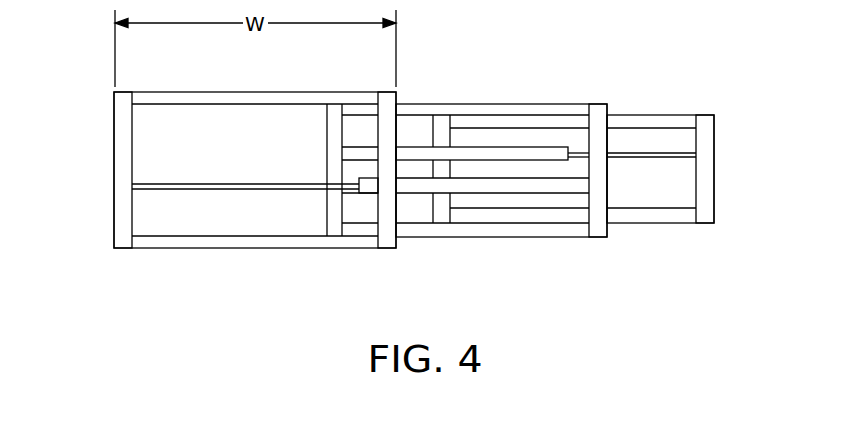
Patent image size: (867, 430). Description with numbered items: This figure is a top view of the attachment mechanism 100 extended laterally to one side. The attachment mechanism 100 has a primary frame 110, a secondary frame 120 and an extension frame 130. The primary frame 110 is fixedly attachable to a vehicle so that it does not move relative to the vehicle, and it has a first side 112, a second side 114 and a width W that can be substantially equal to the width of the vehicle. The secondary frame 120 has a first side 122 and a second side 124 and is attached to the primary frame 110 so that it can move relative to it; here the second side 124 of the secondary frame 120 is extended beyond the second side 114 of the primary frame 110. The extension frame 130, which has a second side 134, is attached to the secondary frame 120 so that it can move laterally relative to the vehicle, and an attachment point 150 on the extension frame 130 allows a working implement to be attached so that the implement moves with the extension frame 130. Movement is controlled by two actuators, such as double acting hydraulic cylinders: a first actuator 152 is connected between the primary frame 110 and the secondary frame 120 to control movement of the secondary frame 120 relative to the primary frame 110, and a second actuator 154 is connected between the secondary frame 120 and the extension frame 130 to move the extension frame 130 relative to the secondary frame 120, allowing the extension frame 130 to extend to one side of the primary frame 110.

The attachment mechanism 100 is at (517, 62).
The primary frame 110 is at (220, 241).
The first side 112 is at (114, 227).
The second side 114 is at (396, 243).
The secondary frame 120 is at (513, 228).
The first side 122 is at (324, 218).
The second side 124 is at (607, 230).
The extension frame 130 is at (673, 217).
The second side 134 is at (714, 203).
The attachment point 150 is at (665, 115).
The first actuator 152 is at (463, 184).
The second actuator 154 is at (550, 154).